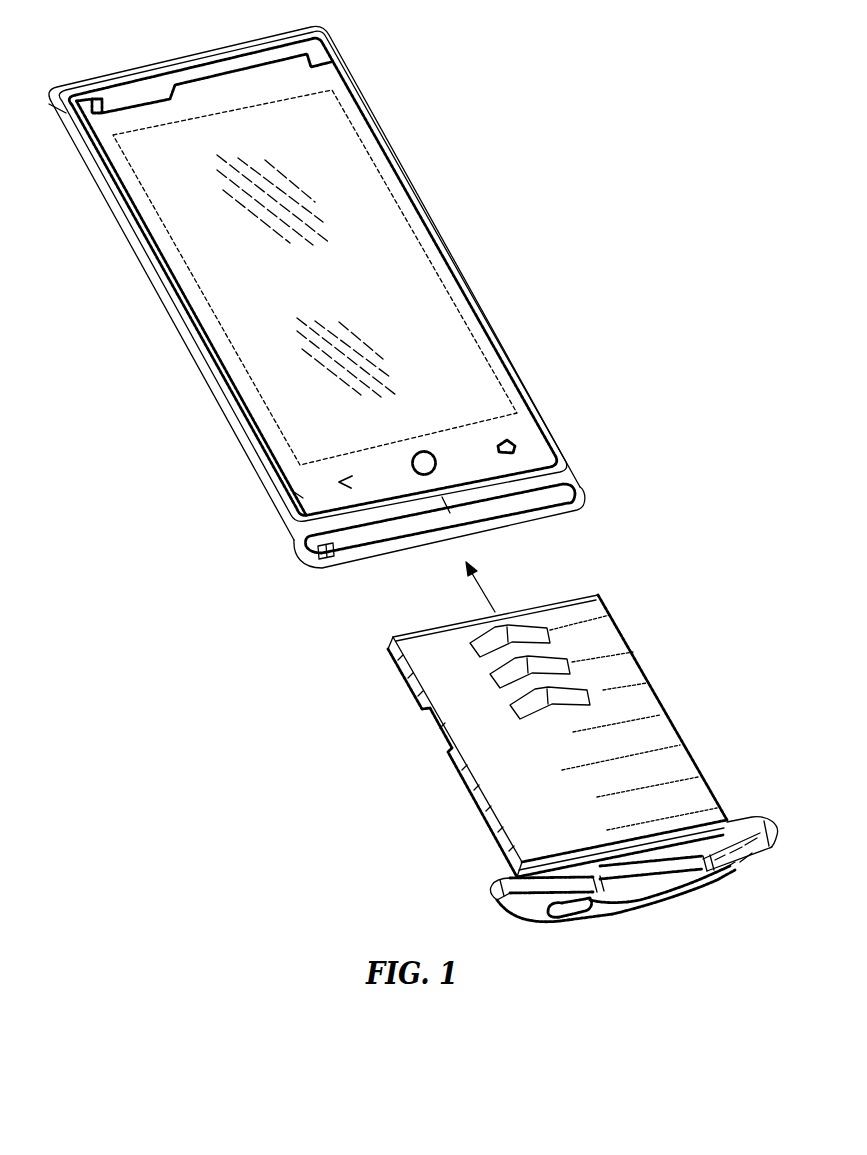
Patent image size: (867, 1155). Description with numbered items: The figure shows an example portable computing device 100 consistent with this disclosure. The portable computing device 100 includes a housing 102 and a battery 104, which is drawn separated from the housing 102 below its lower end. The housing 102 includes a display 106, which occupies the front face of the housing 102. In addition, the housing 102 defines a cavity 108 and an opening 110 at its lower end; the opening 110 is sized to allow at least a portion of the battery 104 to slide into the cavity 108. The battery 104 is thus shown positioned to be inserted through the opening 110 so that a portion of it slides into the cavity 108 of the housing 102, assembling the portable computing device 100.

The portable computing device 100 is at (524, 56).
The housing 102 is at (166, 290).
The battery 104 is at (644, 690).
The display 106 is at (418, 276).
The cavity 108 is at (574, 526).
The opening 110 is at (348, 550).